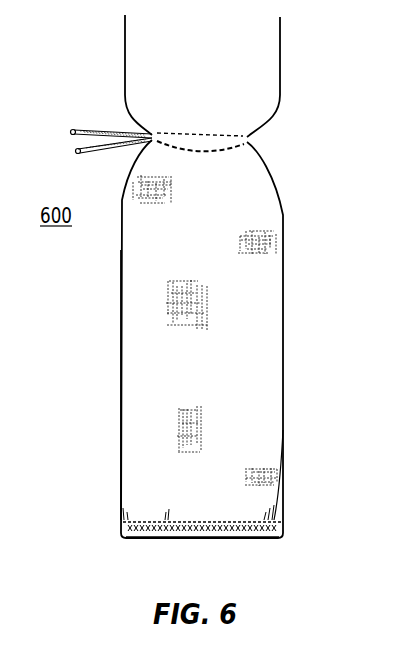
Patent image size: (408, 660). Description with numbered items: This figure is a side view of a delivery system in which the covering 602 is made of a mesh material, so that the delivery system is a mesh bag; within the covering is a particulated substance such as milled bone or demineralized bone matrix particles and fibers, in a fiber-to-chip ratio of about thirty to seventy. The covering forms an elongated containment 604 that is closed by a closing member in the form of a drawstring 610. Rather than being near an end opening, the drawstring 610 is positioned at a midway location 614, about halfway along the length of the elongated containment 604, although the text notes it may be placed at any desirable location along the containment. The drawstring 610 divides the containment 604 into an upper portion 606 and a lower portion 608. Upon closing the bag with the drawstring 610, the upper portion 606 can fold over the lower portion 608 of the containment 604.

The covering 602 is at (283, 298).
The containment 604 is at (112, 359).
The upper portion 606 is at (150, 45).
The lower portion 608 is at (172, 538).
The drawstring 610 is at (94, 120).
The midway location 614 is at (265, 141).